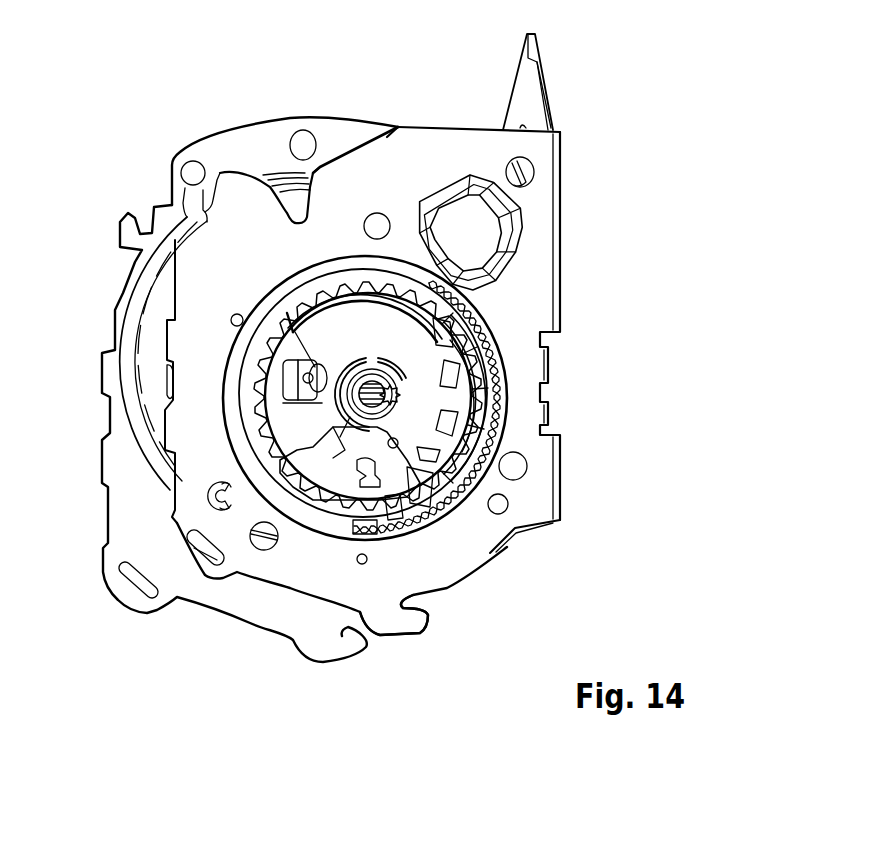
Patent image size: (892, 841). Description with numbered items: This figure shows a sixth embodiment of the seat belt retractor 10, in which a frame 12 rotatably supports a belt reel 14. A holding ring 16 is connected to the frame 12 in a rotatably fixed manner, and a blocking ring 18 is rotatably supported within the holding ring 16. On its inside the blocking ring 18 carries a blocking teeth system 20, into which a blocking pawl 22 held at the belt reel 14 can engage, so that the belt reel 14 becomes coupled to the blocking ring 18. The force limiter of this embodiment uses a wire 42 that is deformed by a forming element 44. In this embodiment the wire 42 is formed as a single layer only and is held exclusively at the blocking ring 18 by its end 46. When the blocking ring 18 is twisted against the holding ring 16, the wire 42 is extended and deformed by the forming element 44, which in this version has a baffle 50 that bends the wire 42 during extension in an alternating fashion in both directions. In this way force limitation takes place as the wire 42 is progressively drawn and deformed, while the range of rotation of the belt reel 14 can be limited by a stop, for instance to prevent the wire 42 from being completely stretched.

The seat belt retractor 10 is at (574, 96).
The frame 12 is at (543, 162).
The belt reel 14 is at (292, 412).
The holding ring 16 is at (303, 520).
The blocking ring 18 is at (470, 347).
The blocking teeth system 20 is at (447, 490).
The blocking pawl 22 is at (414, 535).
The wire 42 is at (490, 353).
The forming element 44 is at (500, 415).
The end 46 is at (358, 540).
The baffle 50 is at (500, 385).